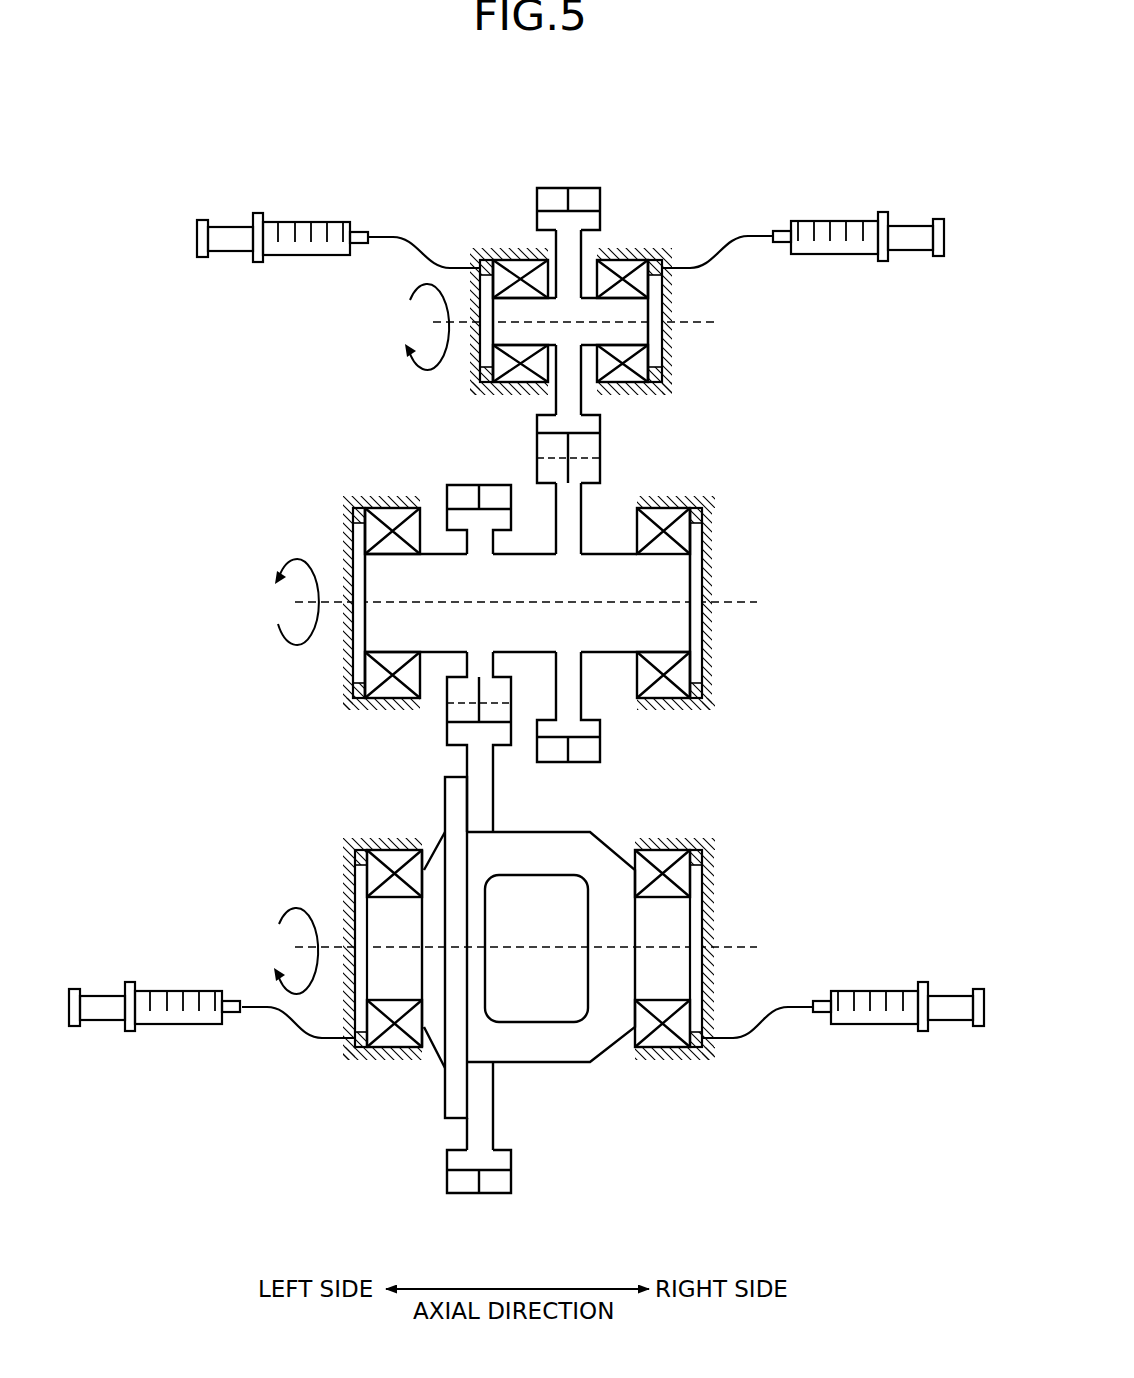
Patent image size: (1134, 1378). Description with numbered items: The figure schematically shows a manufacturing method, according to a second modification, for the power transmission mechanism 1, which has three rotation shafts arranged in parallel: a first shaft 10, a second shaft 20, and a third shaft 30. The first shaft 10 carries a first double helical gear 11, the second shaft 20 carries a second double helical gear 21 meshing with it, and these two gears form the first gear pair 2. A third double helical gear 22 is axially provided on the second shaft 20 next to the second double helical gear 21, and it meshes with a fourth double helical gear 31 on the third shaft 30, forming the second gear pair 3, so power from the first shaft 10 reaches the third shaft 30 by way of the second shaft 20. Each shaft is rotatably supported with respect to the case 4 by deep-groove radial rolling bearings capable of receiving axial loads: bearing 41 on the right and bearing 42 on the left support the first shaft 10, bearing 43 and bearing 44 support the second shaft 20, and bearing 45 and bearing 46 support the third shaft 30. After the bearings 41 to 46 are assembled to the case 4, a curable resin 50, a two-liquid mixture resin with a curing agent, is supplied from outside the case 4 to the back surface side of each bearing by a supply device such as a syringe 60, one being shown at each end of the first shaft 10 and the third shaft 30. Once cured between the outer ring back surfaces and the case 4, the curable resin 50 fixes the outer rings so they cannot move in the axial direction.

The power transmission mechanism 1 is at (694, 106).
The first gear pair 2 is at (584, 161).
The second gear pair 3 is at (429, 733).
The case 4 is at (652, 249).
The first shaft 10 is at (646, 330).
The first double helical gear 11 is at (548, 193).
The second shaft 20 is at (680, 622).
The second double helical gear 21 is at (585, 757).
The third double helical gear 22 is at (465, 488).
The third shaft 30 is at (680, 968).
The fourth double helical gear 31 is at (493, 1195).
The bearing 41 is at (623, 259).
The bearing 42 is at (515, 259).
The bearing 43 is at (663, 505).
The bearing 44 is at (390, 505).
The bearing 45 is at (661, 849).
The bearing 46 is at (388, 849).
The curable resin 50 is at (658, 274).
The syringe 60 is at (300, 218).